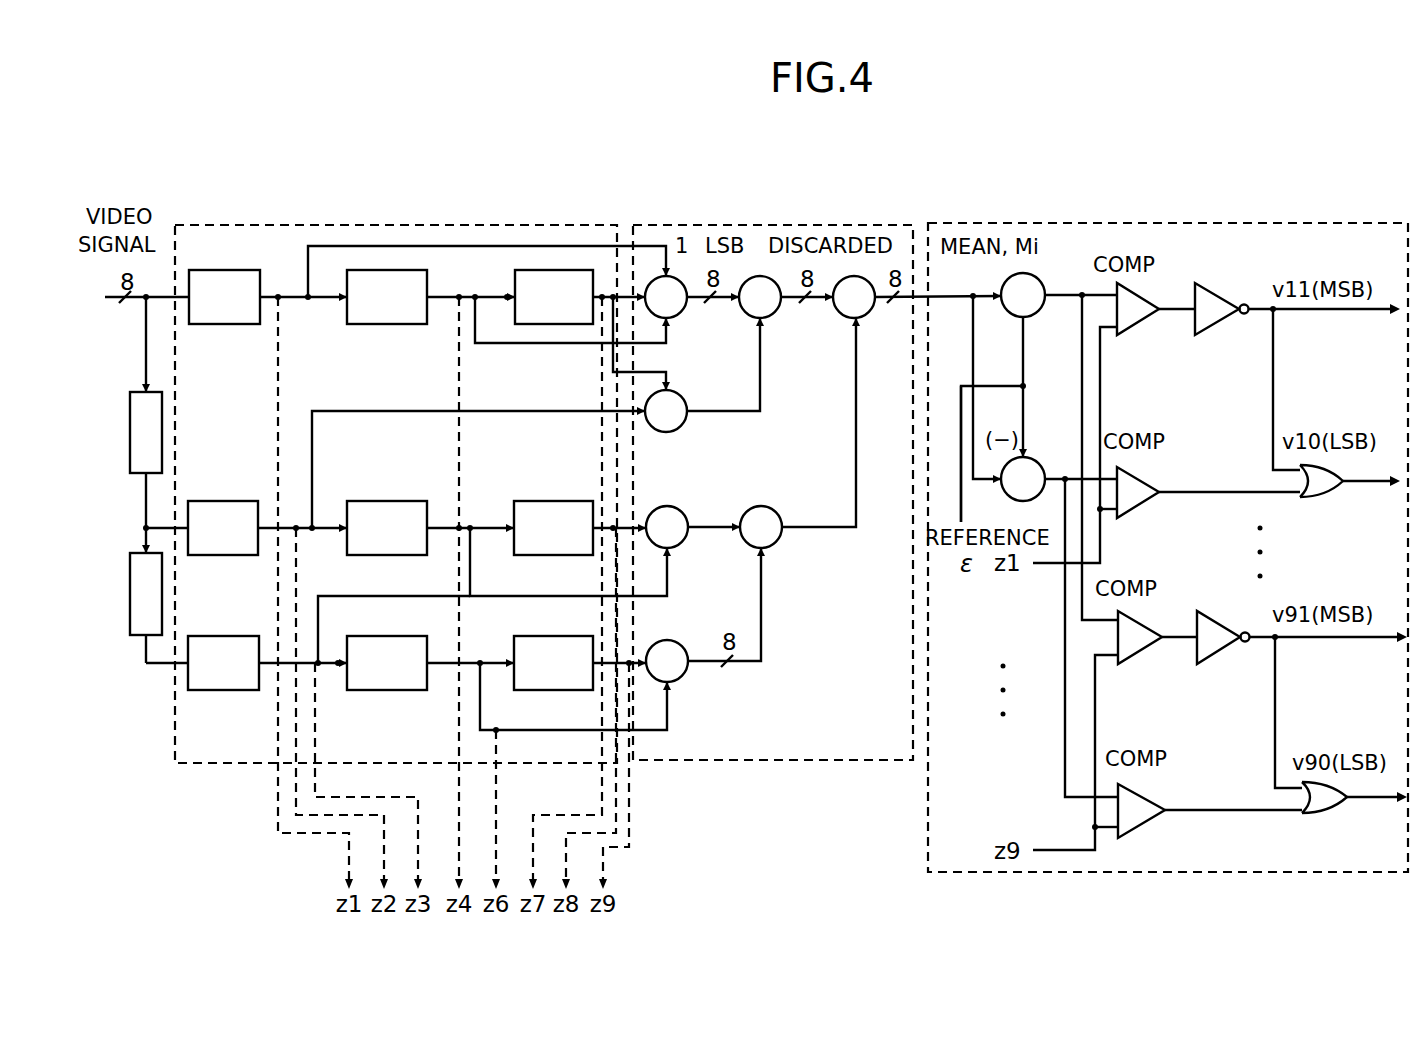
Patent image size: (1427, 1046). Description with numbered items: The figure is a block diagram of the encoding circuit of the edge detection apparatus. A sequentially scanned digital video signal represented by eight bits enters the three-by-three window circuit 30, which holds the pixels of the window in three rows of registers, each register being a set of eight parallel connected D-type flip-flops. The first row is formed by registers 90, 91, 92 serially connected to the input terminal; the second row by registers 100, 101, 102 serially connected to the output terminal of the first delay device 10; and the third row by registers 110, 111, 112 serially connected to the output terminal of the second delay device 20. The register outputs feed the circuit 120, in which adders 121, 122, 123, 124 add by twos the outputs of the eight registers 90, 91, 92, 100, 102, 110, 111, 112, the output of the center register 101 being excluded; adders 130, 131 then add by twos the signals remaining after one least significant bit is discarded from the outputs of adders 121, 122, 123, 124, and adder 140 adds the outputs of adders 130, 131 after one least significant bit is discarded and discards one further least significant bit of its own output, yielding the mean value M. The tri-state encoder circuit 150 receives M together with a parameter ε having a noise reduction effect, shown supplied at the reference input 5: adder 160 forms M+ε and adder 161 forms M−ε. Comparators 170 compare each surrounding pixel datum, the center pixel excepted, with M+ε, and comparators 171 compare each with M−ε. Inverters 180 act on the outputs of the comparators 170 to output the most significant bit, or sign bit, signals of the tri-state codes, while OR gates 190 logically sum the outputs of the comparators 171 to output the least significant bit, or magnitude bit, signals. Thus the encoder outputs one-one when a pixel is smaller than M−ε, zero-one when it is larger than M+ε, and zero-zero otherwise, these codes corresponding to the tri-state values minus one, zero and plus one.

The reference level input line 5 is at (961, 442).
The first delay device 10 is at (143, 389).
The second delay device 20 is at (129, 580).
The 3×3 window circuit 30 is at (489, 225).
The register 90 is at (224, 270).
The register 91 is at (373, 324).
The register 92 is at (536, 324).
The register 100 is at (222, 501).
The register 101 is at (347, 501).
The register 102 is at (566, 501).
The register 110 is at (222, 636).
The register 111 is at (378, 636).
The register 112 is at (522, 636).
The 3×3 window circuit (adder circuit) 120 is at (797, 225).
The adder 121 is at (683, 313).
The adder 122 is at (676, 396).
The adder 123 is at (641, 509).
The adder 124 is at (655, 641).
The adder 130 is at (777, 313).
The adder 131 is at (737, 509).
The adder 140 is at (871, 313).
The tri-state encoder circuit 150 is at (1185, 223).
The adder 160 is at (1042, 313).
The adder 161 is at (1044, 462).
The comparator 170 is at (1148, 317).
The comparator 171 is at (1150, 500).
The inverter 180 is at (1232, 270).
The OR gate 190 is at (1343, 495).